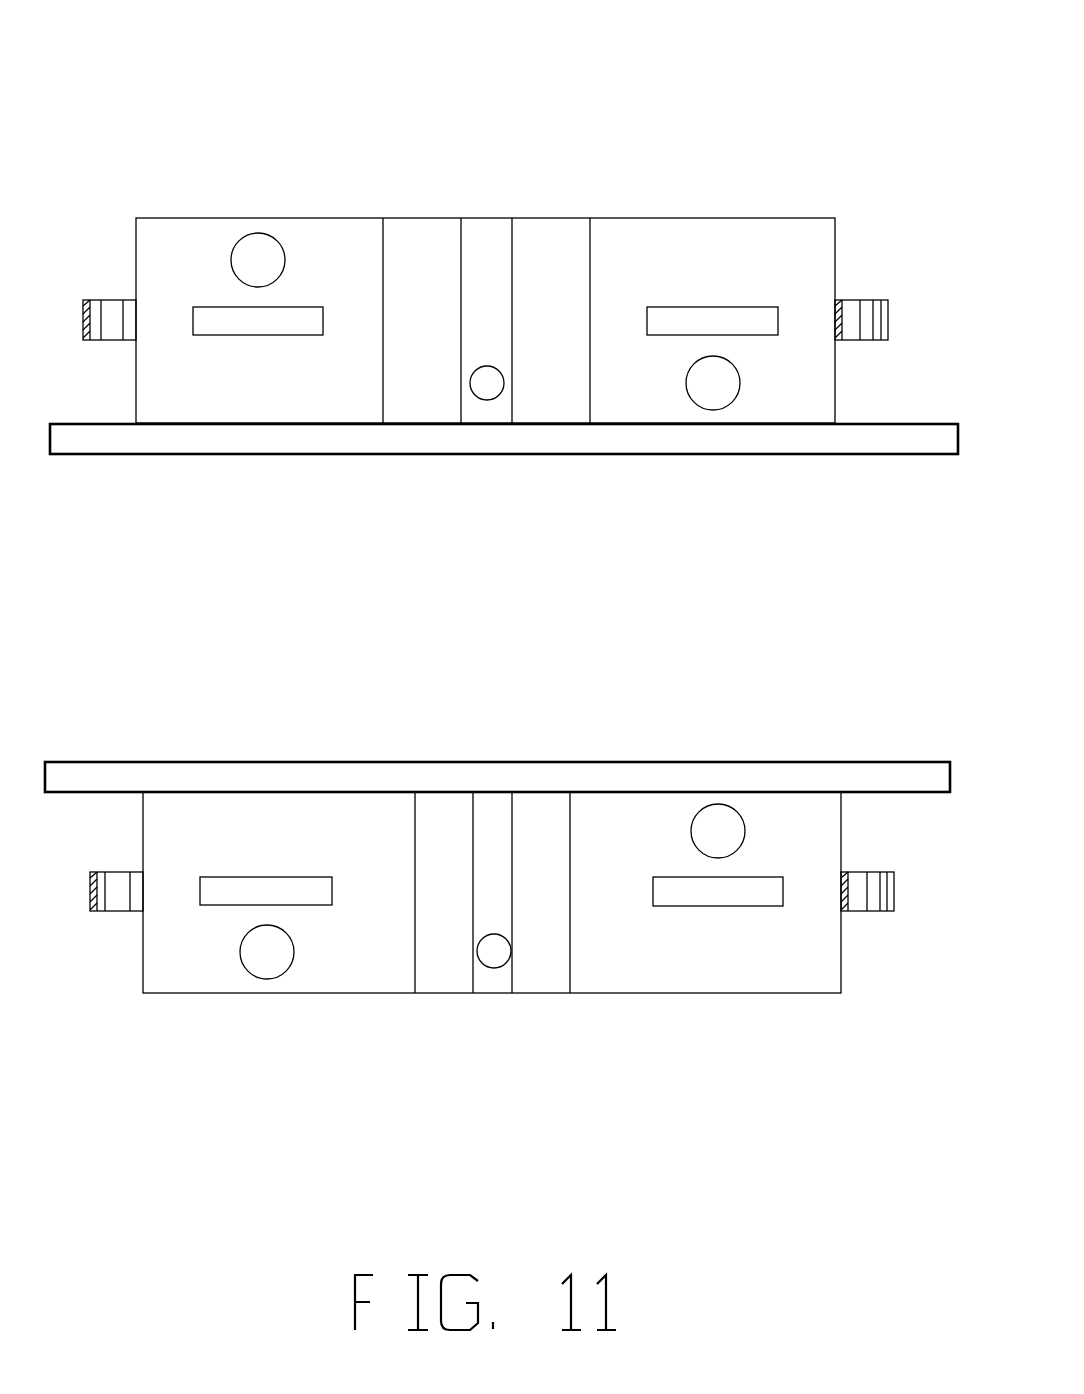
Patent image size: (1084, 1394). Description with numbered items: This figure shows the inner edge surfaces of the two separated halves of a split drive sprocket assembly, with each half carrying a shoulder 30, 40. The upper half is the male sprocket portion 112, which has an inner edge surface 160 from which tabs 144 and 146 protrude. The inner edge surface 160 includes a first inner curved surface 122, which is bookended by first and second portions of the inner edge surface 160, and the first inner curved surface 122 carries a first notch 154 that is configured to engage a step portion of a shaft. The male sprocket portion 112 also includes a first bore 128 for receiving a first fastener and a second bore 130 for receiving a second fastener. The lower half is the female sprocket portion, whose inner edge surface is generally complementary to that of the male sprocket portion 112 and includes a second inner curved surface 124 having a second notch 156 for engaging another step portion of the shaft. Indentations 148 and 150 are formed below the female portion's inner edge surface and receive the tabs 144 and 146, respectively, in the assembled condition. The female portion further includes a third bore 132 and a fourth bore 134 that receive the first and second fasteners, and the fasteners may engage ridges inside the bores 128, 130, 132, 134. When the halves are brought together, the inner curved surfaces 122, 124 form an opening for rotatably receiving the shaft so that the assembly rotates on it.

The shoulder 30 is at (497, 735).
The shoulder 40 is at (504, 480).
The male sprocket portion 112 is at (492, 254).
The first inner curved surface 122 is at (654, 226).
The second inner curved surface 124 is at (492, 947).
The first bore 128 is at (325, 176).
The second bore 130 is at (768, 446).
The third bore 132 is at (325, 1014).
The fourth bore 134 is at (783, 772).
The tab 144 is at (293, 431).
The tab 146 is at (803, 385).
The indentation 148 is at (307, 788).
The indentation 150 is at (792, 960).
The first notch 154 is at (532, 232).
The second notch 156 is at (553, 975).
The inner edge surface 160 is at (457, 211).